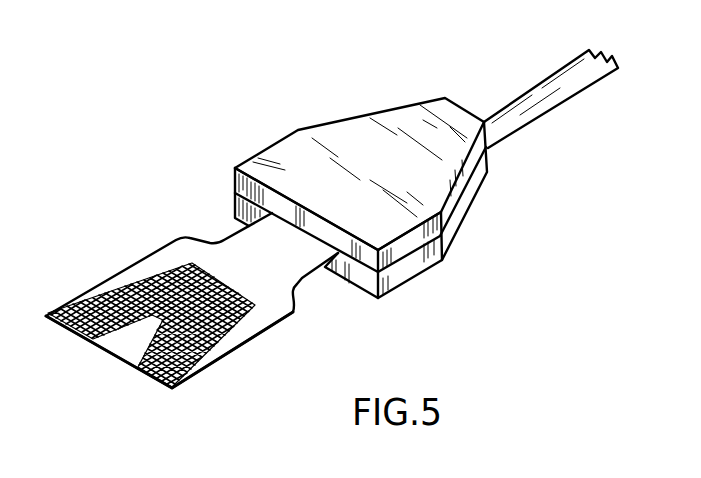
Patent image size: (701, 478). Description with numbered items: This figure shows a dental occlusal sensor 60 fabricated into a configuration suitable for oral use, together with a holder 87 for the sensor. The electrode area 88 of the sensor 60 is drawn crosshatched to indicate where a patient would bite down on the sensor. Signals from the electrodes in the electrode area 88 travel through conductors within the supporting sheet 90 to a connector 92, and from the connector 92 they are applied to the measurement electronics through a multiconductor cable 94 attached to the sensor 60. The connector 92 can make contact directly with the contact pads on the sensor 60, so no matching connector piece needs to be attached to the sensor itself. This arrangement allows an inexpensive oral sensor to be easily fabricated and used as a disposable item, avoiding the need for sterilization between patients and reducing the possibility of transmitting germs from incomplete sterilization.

The sensor 60 is at (332, 230).
The connector 87 is at (328, 186).
The electrode area 88 is at (147, 375).
The supporting sheet 90 is at (281, 290).
The connector 92 is at (390, 124).
The multiconductor cable 94 is at (527, 90).